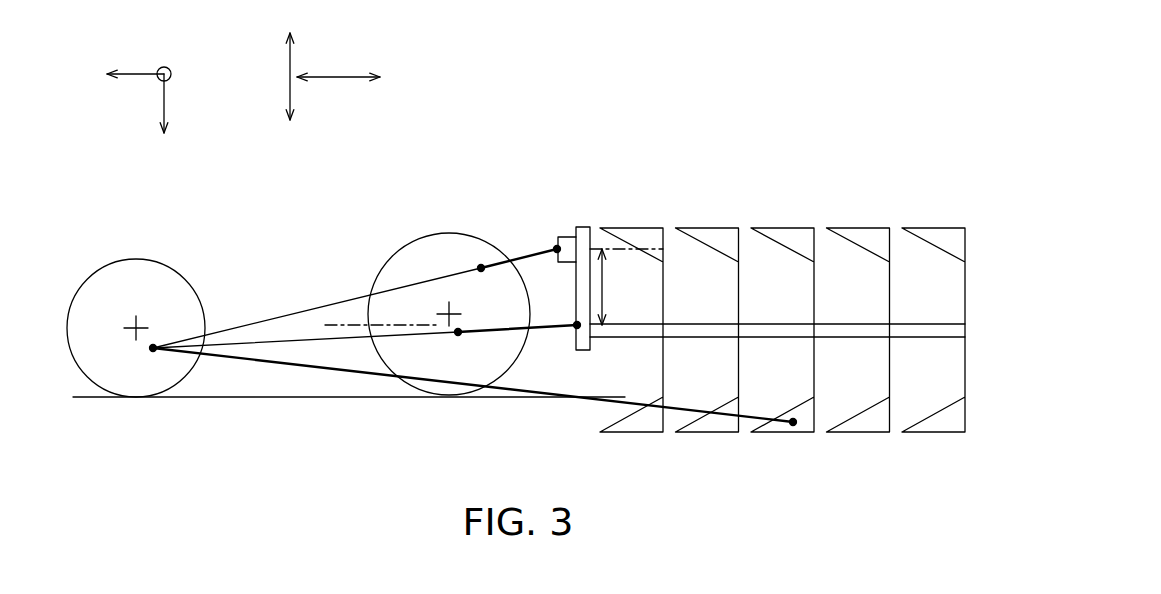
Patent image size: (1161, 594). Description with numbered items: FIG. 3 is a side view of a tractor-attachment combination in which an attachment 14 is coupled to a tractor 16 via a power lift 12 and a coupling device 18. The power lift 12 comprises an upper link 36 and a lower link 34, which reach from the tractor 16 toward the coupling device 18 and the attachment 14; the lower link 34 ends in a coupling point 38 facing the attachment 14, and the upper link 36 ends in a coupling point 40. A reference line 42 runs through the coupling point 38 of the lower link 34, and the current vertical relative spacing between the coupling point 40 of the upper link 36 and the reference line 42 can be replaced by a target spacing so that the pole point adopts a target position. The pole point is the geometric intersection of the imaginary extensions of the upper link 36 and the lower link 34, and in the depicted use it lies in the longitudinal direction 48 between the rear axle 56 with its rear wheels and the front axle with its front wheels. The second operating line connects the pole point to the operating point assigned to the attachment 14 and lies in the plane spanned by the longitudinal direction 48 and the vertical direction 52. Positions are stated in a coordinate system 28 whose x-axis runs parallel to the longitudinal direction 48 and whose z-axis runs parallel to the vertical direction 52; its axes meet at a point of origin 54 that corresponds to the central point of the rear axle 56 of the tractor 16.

The power lift 12 is at (513, 247).
The attachment 14 is at (780, 220).
The tractor 16 is at (297, 242).
The coupling device 18 is at (568, 228).
The coordinate system 28 is at (130, 95).
The lower link 34 is at (497, 338).
The upper link 36 is at (530, 250).
The coupling point 38 is at (575, 328).
The coupling point 40 is at (558, 251).
The reference line 42 is at (342, 313).
The longitudinal direction 48 is at (347, 73).
The vertical direction 52 is at (293, 88).
The point of origin 54 is at (440, 313).
The rear axle 56 is at (166, 67).